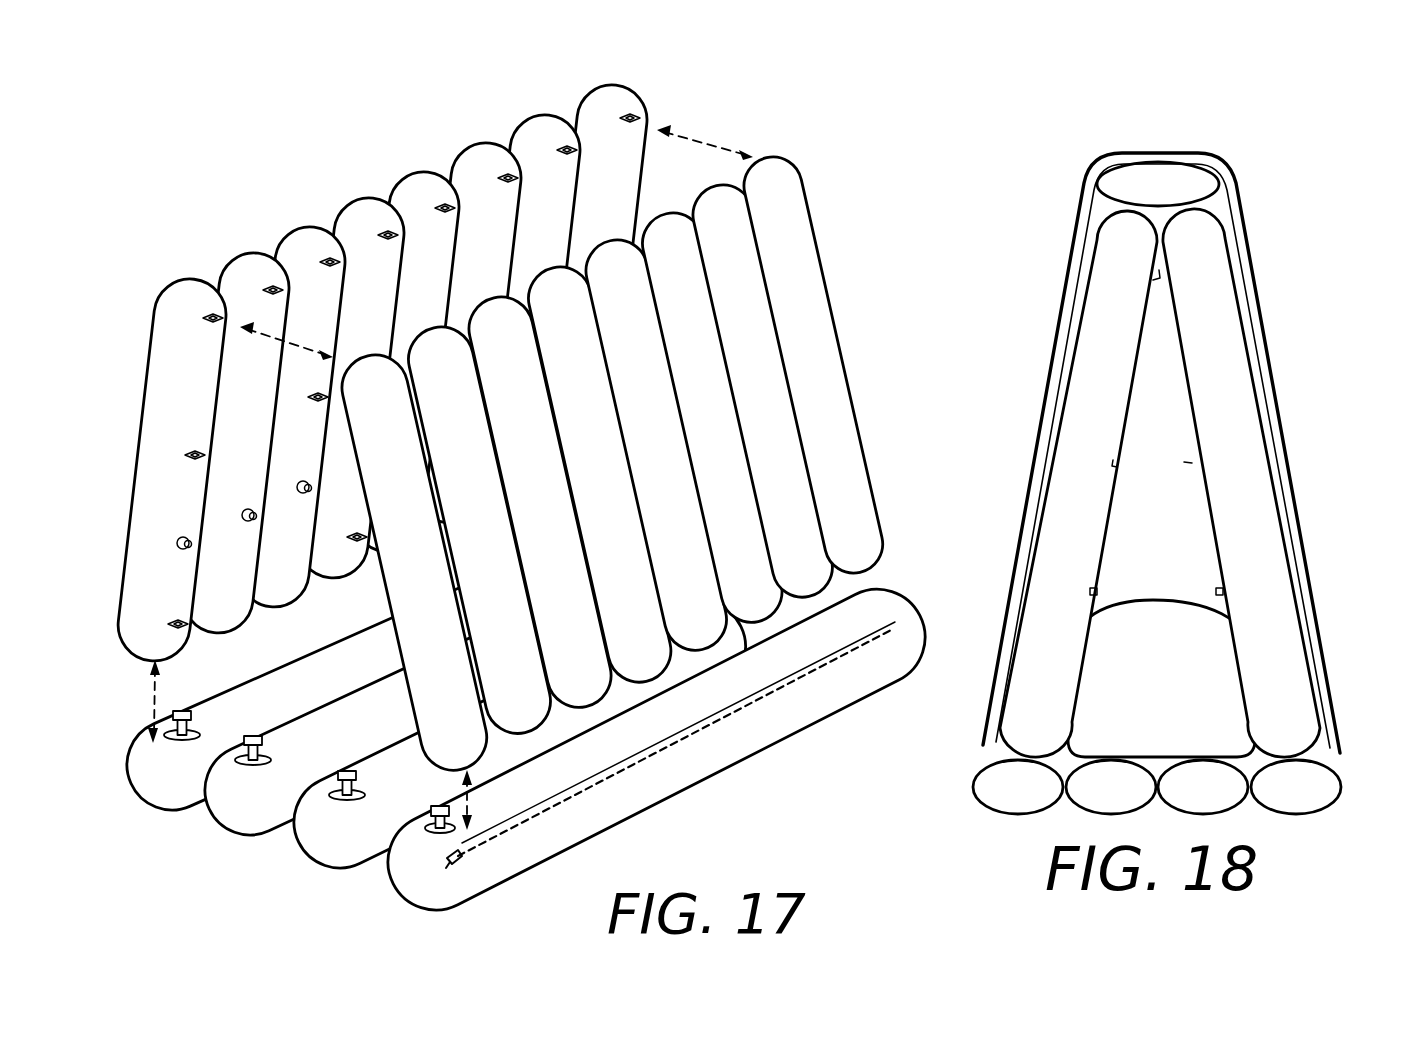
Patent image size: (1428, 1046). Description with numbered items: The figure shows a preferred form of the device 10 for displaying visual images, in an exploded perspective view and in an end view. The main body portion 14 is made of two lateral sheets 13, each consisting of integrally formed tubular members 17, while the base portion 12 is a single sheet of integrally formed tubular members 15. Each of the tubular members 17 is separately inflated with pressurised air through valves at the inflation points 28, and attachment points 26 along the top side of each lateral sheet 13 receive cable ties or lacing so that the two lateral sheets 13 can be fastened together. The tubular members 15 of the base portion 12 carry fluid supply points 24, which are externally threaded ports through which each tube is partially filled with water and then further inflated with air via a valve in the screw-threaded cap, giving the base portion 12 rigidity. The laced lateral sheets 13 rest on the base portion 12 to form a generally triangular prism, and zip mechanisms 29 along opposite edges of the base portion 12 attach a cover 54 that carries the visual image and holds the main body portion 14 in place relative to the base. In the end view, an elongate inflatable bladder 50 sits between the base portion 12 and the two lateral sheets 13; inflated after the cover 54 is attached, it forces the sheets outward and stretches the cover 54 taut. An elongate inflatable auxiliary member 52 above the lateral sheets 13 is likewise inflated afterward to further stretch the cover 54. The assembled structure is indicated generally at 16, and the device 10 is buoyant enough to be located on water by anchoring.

In FIG. 17, the device 10 is at (177, 168).
In FIG. 17, the base portion 12 is at (688, 797).
In FIG. 18, the base portion 12 is at (1333, 807).
In FIG. 17, the lateral sheets 13 is at (133, 368).
In FIG. 18, the lateral sheets 13 is at (1213, 237).
In FIG. 17, the main body portion 14 is at (762, 115).
In FIG. 18, the main body portion 14 is at (1348, 153).
In FIG. 17, the tubular members 15 is at (237, 825).
In FIG. 18, the A-frame structure 16 is at (1010, 322).
In FIG. 17, the tubular members 17 is at (527, 127).
In FIG. 17, the fluid supply points 24 is at (250, 768).
In FIG. 17, the attachment points 26 is at (210, 315).
In FIG. 18, the attachment points 26 is at (1153, 280).
In FIG. 17, the inflation points 28 is at (183, 543).
In FIG. 18, the inflation points 28 is at (1215, 590).
In FIG. 17, the zip mechanisms 29 is at (790, 680).
In FIG. 18, the zip mechanisms 29 is at (1343, 770).
In FIG. 18, the inflatable bladder 50 is at (1117, 643).
In FIG. 18, the auxiliary member 52 is at (1200, 183).
In FIG. 18, the cover 54 is at (1082, 227).